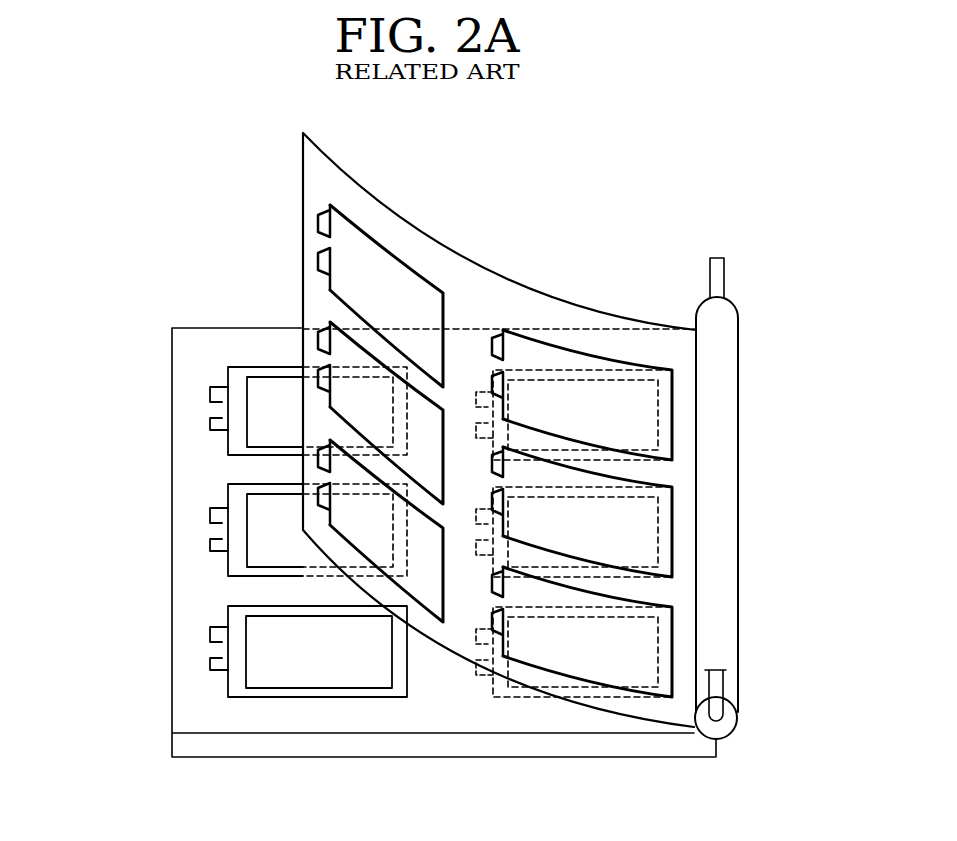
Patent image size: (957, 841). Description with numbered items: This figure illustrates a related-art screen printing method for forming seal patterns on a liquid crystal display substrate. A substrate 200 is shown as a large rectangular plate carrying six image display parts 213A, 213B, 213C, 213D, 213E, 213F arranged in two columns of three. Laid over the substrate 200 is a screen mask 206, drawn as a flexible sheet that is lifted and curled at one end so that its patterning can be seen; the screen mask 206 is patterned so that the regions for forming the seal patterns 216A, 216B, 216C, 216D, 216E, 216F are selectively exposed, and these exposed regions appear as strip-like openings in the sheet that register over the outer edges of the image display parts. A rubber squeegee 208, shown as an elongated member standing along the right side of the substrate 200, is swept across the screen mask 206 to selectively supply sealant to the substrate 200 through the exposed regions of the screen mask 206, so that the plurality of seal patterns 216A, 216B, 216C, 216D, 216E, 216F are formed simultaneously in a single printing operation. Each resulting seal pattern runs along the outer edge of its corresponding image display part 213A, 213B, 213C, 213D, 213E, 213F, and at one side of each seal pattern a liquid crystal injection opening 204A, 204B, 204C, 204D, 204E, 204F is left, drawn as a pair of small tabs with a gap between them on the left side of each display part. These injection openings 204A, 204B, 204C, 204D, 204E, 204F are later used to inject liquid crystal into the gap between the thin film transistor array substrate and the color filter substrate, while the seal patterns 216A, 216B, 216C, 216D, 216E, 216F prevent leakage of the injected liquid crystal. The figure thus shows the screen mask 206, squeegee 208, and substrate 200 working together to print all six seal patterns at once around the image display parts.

The substrate 200 is at (700, 752).
The screen mask 206 is at (340, 173).
The rubber squeegee 208 is at (725, 325).
The liquid crystal injection opening 204A is at (472, 410).
The liquid crystal injection opening 204B is at (478, 528).
The liquid crystal injection opening 204C is at (478, 652).
The liquid crystal injection opening 204D is at (213, 410).
The liquid crystal injection opening 204E is at (213, 528).
The liquid crystal injection opening 204F is at (213, 649).
The image display part 213A is at (583, 426).
The image display part 213B is at (583, 543).
The image display part 213C is at (583, 663).
The image display part 213D is at (255, 423).
The image display part 213E is at (255, 541).
The image display part 213F is at (253, 662).
The seal pattern 216A is at (567, 370).
The seal pattern 216B is at (567, 485).
The seal pattern 216C is at (567, 607).
The seal pattern 216D is at (228, 379).
The seal pattern 216E is at (227, 497).
The seal pattern 216F is at (228, 614).